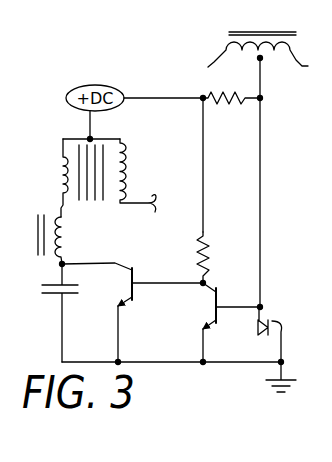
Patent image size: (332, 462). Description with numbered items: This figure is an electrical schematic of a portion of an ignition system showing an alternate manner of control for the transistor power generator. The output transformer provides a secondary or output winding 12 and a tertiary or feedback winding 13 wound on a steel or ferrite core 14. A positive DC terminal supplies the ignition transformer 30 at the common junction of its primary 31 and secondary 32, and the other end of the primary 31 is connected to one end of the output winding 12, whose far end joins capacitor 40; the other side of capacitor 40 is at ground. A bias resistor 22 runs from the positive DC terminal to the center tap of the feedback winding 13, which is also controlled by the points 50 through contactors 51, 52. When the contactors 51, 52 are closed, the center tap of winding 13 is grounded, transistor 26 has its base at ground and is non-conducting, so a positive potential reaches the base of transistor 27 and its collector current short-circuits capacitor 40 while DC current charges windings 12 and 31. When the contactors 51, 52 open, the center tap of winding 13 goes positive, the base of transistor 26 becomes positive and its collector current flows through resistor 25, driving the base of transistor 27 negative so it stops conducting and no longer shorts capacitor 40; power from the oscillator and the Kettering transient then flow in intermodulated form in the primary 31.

The secondary or output winding 12 is at (66, 247).
The tertiary or feedback winding 13 is at (228, 48).
The core 14 is at (244, 32).
The bias resistor 22 is at (218, 100).
The resistor 25 is at (210, 247).
The transistor 26 is at (211, 306).
The transistor 27 is at (126, 281).
The ignition transformer 30 is at (92, 160).
The primary 31 is at (62, 179).
The secondary 32 is at (126, 165).
The capacitor 40 is at (50, 294).
The points 50 is at (264, 324).
The contactor 51 is at (278, 297).
The contactor 52 is at (283, 344).